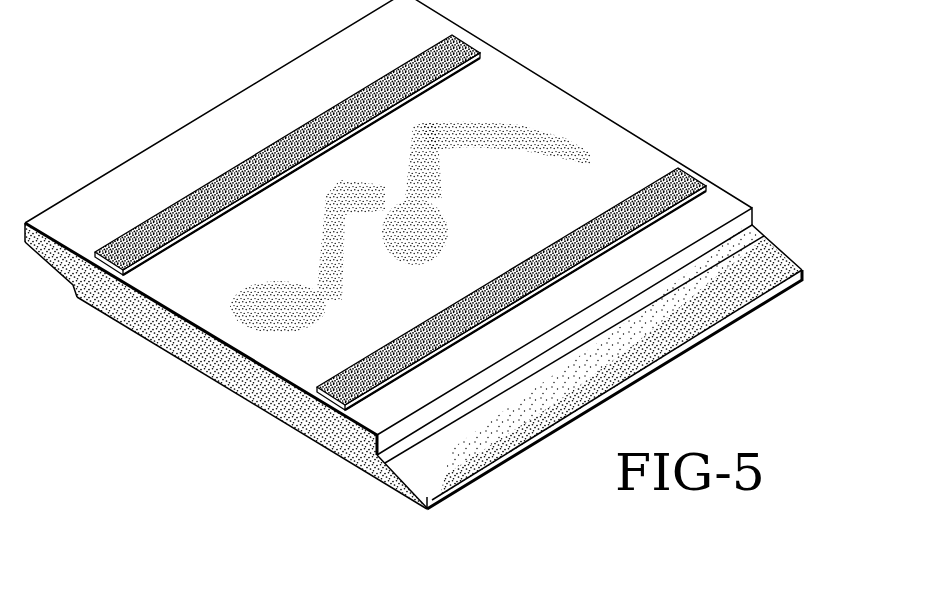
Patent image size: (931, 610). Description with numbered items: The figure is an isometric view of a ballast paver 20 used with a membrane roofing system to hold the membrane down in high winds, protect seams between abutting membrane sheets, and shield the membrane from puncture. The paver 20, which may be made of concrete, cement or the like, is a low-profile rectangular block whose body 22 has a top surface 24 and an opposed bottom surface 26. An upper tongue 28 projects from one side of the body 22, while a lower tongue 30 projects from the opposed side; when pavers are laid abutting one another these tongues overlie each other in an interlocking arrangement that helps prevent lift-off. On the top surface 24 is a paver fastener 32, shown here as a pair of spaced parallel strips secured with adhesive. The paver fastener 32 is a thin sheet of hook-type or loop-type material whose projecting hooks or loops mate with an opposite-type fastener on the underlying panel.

The ballast paver 20 is at (97, 108).
The body 22 is at (187, 330).
The top surface 24 is at (510, 103).
The bottom surface 26 is at (303, 433).
The upper tongue 28 is at (65, 260).
The lower tongue 30 is at (432, 467).
The paver fastener 32 is at (452, 46).